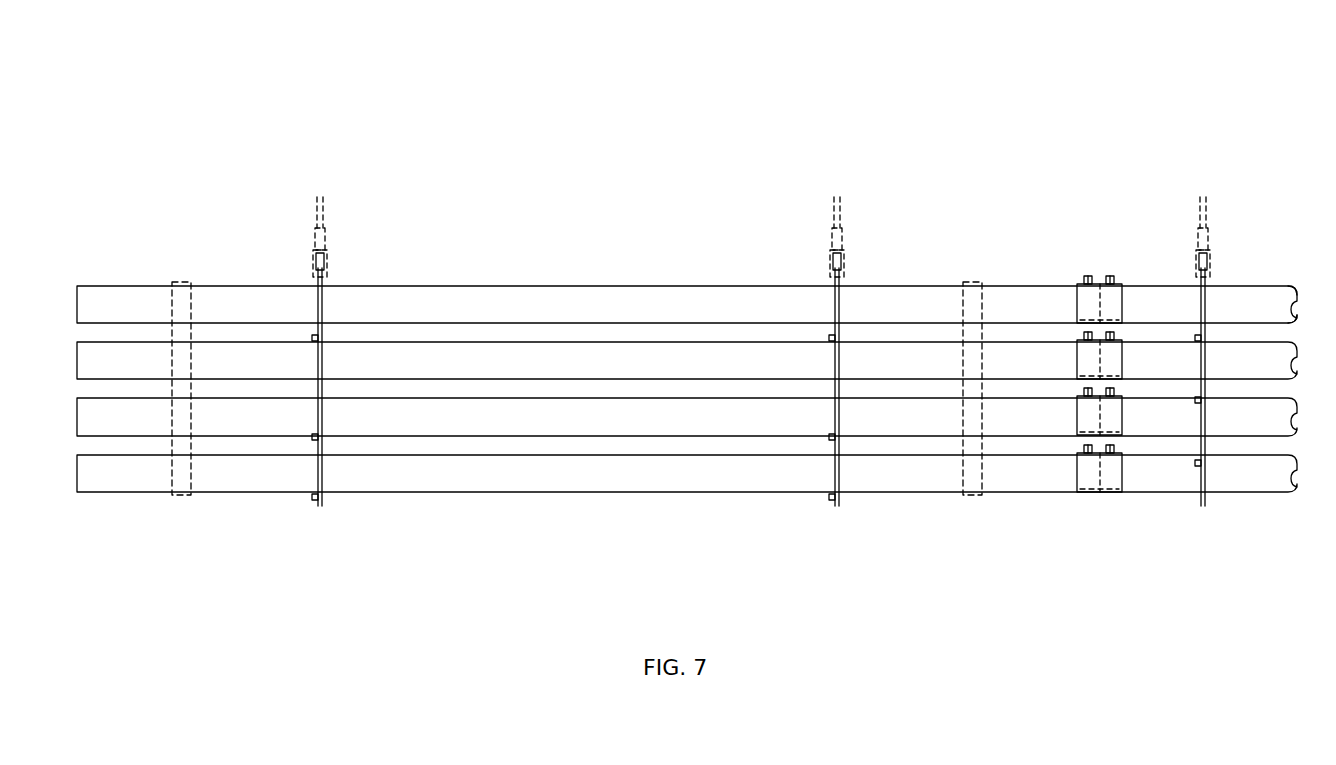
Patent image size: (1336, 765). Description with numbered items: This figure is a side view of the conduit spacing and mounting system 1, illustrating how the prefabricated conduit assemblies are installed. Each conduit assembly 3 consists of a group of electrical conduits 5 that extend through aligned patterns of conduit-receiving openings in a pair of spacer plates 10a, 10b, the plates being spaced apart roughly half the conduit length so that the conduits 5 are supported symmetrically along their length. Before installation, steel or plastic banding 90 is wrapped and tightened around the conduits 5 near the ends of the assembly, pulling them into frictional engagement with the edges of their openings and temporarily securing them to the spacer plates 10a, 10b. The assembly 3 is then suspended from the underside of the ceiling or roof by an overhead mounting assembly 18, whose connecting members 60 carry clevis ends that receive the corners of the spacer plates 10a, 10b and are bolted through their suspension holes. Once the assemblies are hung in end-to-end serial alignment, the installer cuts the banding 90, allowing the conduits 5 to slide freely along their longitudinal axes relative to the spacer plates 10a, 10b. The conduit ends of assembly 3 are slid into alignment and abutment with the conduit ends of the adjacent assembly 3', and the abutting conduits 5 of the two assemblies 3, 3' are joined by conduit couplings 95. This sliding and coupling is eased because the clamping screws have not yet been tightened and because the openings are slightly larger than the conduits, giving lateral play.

The conduit spacing and mounting system 1 is at (462, 93).
The conduit assembly 3 is at (687, 334).
The adjacent conduit assembly 3' is at (1257, 219).
The electrical conduit 5 is at (575, 315).
The spacer plate 10a is at (820, 306).
The spacer plate 10b is at (332, 302).
The overhead mounting assembly 18 is at (337, 193).
The connecting member 60 is at (330, 253).
The banding 90 is at (183, 497).
The conduit coupling 95 is at (1115, 413).